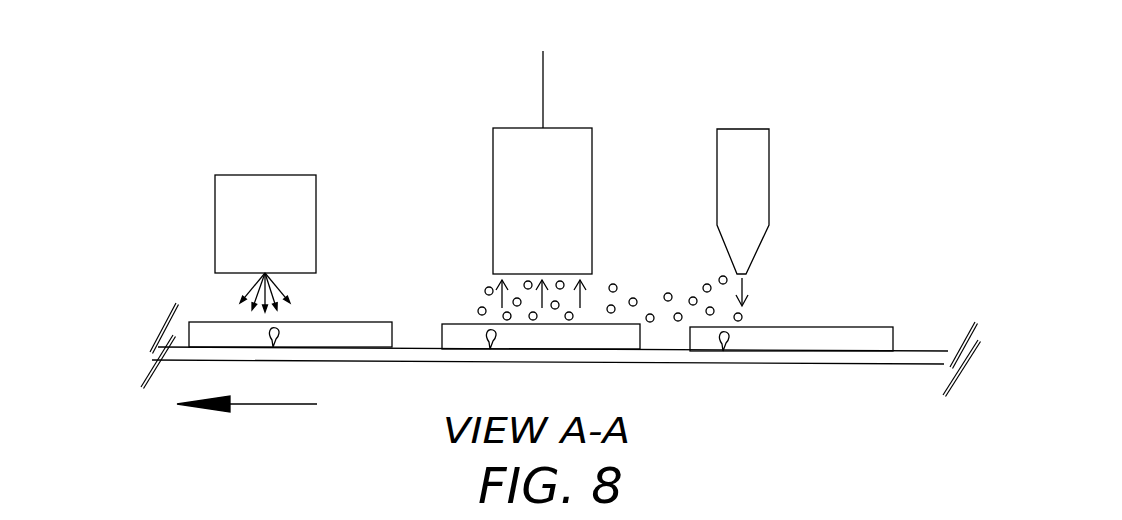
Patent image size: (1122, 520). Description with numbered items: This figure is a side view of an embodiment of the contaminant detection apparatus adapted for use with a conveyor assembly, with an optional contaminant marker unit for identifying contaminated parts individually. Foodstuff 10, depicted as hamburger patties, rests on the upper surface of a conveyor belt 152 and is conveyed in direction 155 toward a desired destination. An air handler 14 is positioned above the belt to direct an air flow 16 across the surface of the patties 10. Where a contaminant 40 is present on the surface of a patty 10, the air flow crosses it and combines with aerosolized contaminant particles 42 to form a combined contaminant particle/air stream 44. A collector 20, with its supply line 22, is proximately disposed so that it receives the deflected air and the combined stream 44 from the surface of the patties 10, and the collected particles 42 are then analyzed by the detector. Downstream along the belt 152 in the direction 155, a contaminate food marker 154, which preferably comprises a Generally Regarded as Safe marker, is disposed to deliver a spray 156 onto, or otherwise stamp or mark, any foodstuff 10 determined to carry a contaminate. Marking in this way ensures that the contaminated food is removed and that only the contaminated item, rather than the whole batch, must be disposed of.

The foodstuff 10 is at (340, 322).
The air handler 14 is at (742, 129).
The air flow 16 is at (742, 283).
The collector 20 is at (573, 128).
The supply line 22 is at (543, 87).
The contaminant 40 is at (272, 347).
The aerosolized contaminant particles 42 is at (652, 322).
The combined contaminant particle/air stream 44 is at (478, 293).
The conveyor belt 152 is at (940, 348).
The contaminate food marker 154 is at (265, 175).
The direction 155 is at (255, 404).
The spray 156 is at (305, 289).